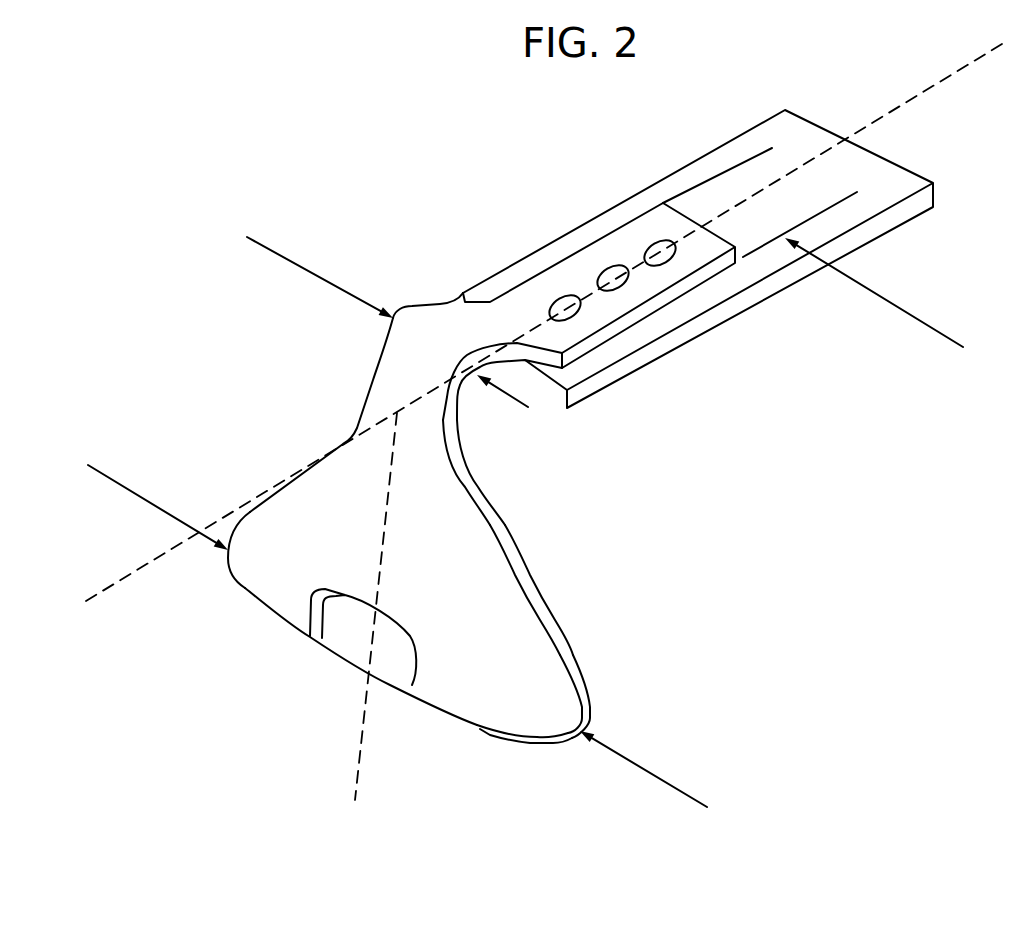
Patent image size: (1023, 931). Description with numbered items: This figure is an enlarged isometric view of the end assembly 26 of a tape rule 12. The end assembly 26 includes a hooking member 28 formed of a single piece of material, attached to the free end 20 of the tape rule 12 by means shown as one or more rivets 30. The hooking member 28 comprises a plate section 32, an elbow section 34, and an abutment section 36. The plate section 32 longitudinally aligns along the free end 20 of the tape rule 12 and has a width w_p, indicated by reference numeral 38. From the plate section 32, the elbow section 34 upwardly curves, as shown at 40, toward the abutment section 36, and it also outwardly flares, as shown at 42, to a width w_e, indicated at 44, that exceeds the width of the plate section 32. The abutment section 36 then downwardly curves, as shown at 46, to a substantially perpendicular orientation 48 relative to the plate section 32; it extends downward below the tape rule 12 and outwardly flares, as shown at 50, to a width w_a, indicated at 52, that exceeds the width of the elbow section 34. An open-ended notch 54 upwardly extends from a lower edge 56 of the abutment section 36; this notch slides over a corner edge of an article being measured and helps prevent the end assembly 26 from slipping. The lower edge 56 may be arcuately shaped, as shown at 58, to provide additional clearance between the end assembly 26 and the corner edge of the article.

The tape rule 12 is at (797, 283).
The free end 20 is at (617, 383).
The end assembly 26 is at (162, 311).
The hooking member 28 is at (390, 687).
The rivets 30 is at (606, 266).
The plate section 32 is at (693, 180).
The elbow section 34 is at (412, 307).
The abutment section 36 is at (282, 490).
The width w_p 38 is at (903, 309).
The upward curve 40 is at (543, 365).
The outward flare 42 is at (391, 336).
The width w_e 44 is at (291, 263).
The downward curve 46 is at (482, 487).
The substantially perpendicular orientation 48 is at (582, 668).
The outward flare 50 is at (547, 588).
The width w_a 52 is at (645, 770).
The open-ended notch 54 is at (350, 637).
The lower edge 56 is at (249, 592).
The arcuate shape 58 is at (480, 730).